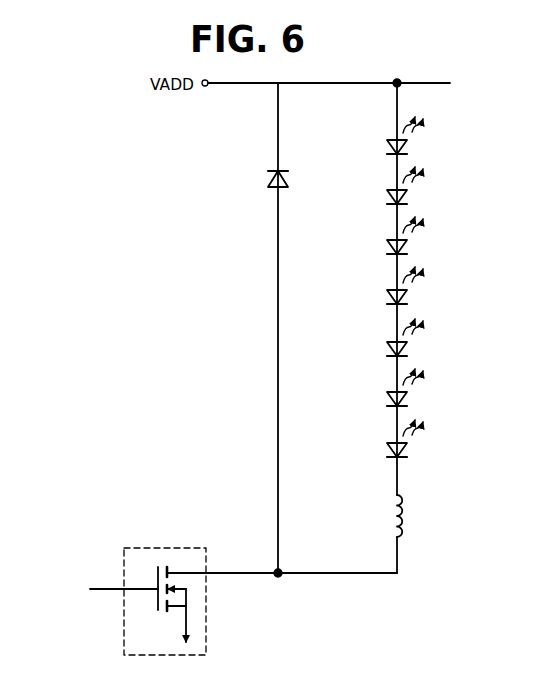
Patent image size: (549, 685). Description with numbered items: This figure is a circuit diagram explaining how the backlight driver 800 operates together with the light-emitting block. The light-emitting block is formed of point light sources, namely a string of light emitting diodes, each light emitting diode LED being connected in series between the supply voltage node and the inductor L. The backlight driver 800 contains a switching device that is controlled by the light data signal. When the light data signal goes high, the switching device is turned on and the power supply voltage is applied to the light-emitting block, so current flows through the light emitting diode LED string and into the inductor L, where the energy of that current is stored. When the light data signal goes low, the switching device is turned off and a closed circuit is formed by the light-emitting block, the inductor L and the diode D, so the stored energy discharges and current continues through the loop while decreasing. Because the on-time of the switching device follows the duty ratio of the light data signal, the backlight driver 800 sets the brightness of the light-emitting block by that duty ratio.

The backlight driver 800 is at (150, 548).
The diode D is at (269, 328).
The light emitting diode LED is at (386, 147).
The inductor L is at (391, 534).